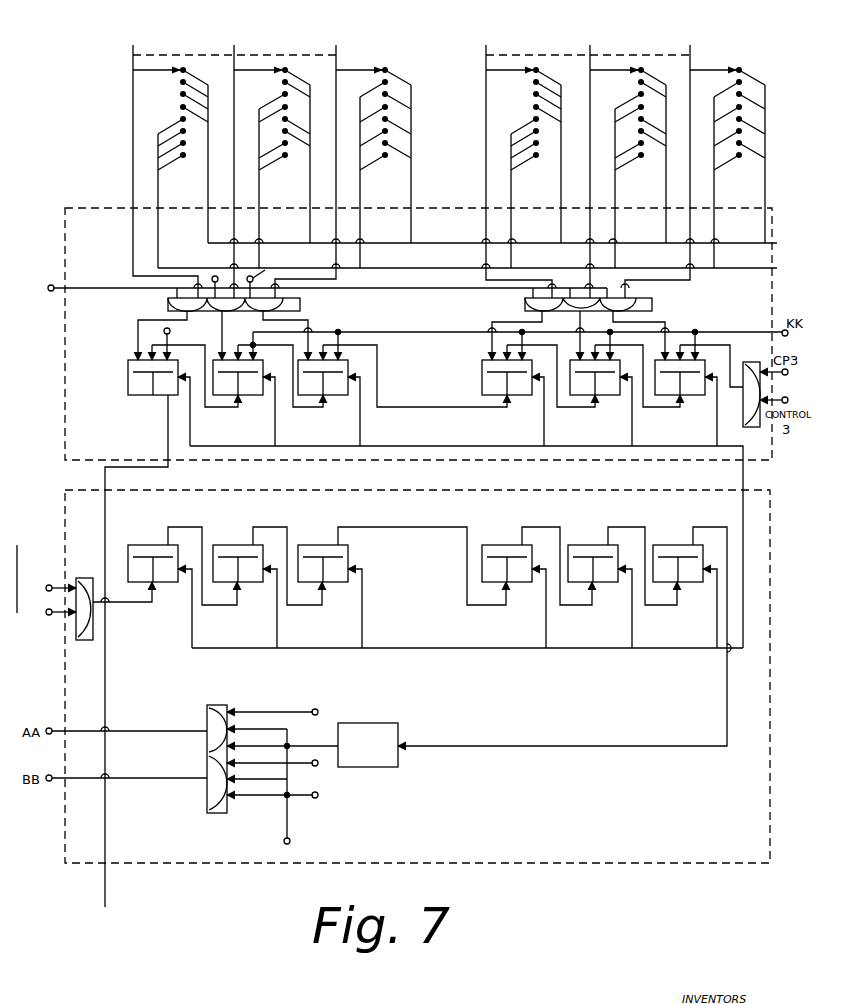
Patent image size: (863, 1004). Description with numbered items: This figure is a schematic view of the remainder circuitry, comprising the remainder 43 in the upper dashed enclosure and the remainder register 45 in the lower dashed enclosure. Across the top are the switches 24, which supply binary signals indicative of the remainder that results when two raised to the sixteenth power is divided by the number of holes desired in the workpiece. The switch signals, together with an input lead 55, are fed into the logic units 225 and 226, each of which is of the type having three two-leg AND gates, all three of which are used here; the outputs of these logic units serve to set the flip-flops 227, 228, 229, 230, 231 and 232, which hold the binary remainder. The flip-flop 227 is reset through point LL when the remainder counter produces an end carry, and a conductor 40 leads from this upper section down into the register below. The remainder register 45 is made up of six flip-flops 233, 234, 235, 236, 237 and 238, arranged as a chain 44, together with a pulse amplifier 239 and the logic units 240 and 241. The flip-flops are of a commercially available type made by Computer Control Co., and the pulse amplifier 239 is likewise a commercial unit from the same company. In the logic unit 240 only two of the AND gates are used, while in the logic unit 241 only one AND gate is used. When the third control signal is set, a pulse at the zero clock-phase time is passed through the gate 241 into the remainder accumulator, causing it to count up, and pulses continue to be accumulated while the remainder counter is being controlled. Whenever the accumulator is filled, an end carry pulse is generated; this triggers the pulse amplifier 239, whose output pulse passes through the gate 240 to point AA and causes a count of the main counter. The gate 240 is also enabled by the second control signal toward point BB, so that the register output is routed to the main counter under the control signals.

The switches 24 is at (317, 53).
The remainder 43 is at (77, 206).
The input lead 55 is at (313, 286).
The logic unit 225 is at (300, 308).
The logic unit 226 is at (523, 305).
The flip-flop 227 is at (140, 396).
The flip-flop 228 is at (260, 396).
The flip-flop 229 is at (347, 396).
The flip-flop 230 is at (527, 396).
The flip-flop 231 is at (615, 396).
The flip-flop 232 is at (700, 396).
The output conductor 40 is at (168, 467).
The shift register 44 is at (743, 508).
The remainder register 45 is at (64, 538).
The flip-flop 233 is at (142, 544).
The flip-flop 234 is at (228, 544).
The flip-flop 235 is at (313, 544).
The flip-flop 236 is at (499, 544).
The flip-flop 237 is at (587, 544).
The flip-flop 238 is at (672, 544).
The pulse amplifier 239 is at (394, 737).
The logic unit 240 is at (216, 813).
The logic unit 241 is at (85, 577).